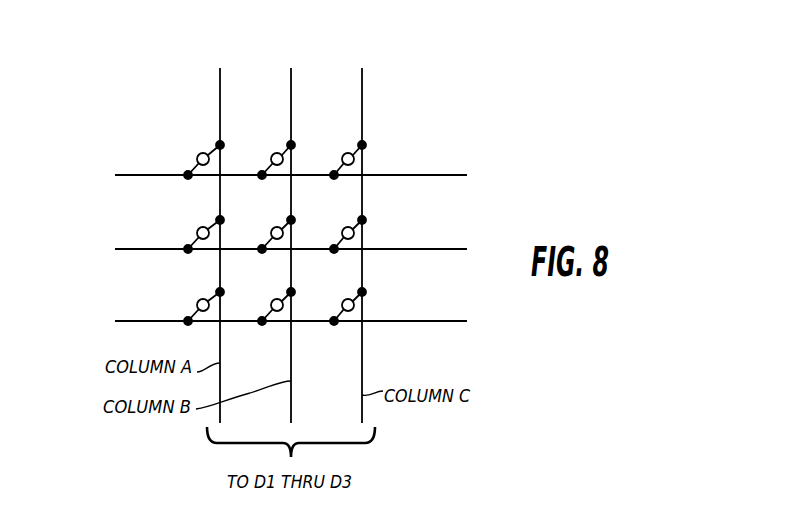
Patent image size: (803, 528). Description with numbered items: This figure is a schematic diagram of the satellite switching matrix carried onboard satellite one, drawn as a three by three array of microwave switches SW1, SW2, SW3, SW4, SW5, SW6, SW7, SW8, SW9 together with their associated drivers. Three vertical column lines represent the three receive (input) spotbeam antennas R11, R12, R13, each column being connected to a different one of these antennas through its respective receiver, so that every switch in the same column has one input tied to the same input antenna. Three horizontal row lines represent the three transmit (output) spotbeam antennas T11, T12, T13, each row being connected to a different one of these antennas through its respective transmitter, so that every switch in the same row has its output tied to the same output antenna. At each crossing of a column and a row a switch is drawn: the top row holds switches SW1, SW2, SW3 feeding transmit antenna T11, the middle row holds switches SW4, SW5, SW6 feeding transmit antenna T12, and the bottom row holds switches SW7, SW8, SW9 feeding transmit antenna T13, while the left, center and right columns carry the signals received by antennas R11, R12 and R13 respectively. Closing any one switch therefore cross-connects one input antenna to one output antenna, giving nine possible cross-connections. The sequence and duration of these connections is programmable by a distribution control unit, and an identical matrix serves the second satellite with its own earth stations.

The receive spotbeam antenna R11 is at (226, 233).
The receive spotbeam antenna R12 is at (296, 233).
The receive spotbeam antenna R13 is at (366, 233).
The transmit spotbeam antenna T11 is at (277, 169).
The transmit spotbeam antenna T12 is at (276, 245).
The transmit spotbeam antenna T13 is at (276, 317).
The microwave switch SW1 is at (215, 144).
The microwave switch SW2 is at (282, 144).
The microwave switch SW3 is at (354, 144).
The microwave switch SW4 is at (206, 222).
The microwave switch SW5 is at (279, 222).
The microwave switch SW6 is at (348, 222).
The microwave switch SW7 is at (207, 295).
The microwave switch SW8 is at (279, 295).
The microwave switch SW9 is at (351, 295).